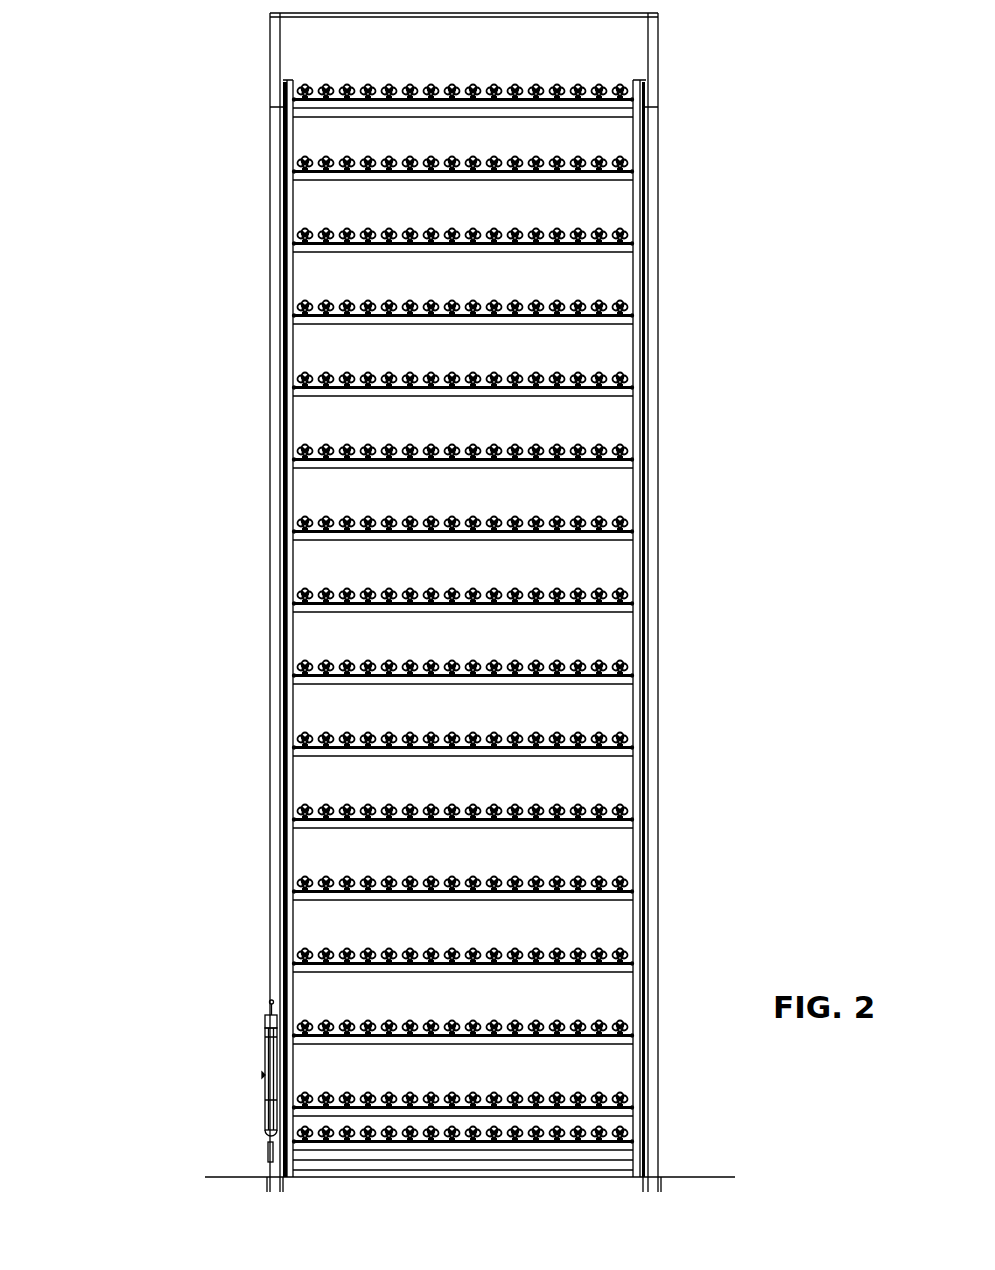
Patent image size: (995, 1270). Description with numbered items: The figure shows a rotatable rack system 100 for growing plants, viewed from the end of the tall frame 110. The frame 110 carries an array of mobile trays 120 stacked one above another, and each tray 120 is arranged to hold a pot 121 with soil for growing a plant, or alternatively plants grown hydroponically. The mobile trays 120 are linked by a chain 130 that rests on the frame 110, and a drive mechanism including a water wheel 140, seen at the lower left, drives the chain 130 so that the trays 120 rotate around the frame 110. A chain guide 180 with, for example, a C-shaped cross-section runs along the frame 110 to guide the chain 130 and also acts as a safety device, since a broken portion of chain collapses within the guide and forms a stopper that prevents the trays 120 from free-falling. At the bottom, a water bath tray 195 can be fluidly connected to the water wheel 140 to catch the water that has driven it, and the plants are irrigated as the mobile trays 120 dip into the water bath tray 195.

The rotatable rack system 100 is at (163, 199).
The frame 110 is at (660, 255).
The trays 120 is at (618, 460).
The pot 121 is at (627, 378).
The chain 130 is at (648, 598).
The chain guide 180 is at (637, 697).
The water wheel 140 is at (263, 1055).
The water bath tray 195 is at (303, 1151).